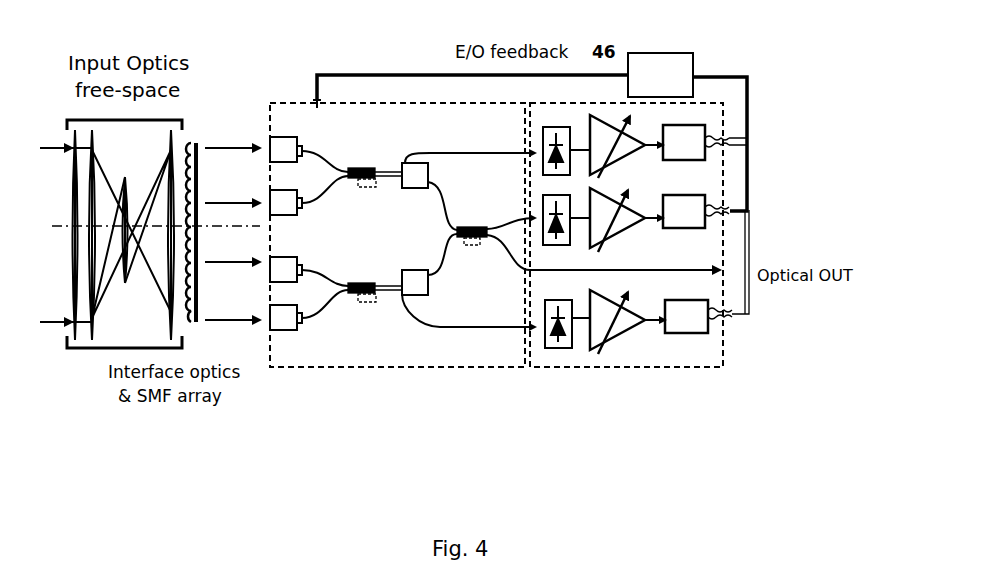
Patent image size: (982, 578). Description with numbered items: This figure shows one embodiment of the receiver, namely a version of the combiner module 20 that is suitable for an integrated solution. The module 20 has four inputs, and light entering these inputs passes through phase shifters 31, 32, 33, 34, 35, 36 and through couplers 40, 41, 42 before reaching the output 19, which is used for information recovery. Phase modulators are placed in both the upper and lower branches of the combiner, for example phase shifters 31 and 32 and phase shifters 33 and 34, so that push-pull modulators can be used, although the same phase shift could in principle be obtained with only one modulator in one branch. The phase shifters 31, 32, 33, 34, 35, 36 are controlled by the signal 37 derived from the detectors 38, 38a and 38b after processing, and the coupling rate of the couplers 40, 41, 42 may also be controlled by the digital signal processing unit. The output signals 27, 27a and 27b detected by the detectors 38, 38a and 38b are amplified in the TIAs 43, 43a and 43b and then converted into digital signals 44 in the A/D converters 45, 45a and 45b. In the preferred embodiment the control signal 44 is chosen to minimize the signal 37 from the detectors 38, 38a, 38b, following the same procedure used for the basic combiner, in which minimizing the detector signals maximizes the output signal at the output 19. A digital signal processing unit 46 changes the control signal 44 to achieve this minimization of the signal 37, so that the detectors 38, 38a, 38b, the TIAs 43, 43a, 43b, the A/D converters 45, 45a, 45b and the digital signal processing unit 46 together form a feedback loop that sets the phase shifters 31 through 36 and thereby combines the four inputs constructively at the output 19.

The output 19 is at (603, 256).
The combiner module 20 is at (397, 235).
The output signal 27 is at (511, 215).
The output signal 27a is at (470, 164).
The output signal 27b is at (468, 312).
The phase shifter 31 is at (309, 143).
The phase shifter 32 is at (309, 204).
The phase shifter 33 is at (309, 262).
The phase shifter 34 is at (309, 318).
The phase shifter 35 is at (429, 196).
The phase shifter 36 is at (429, 274).
The signal 37 is at (734, 144).
The detector 38 is at (566, 229).
The detector 38a is at (565, 140).
The detector 38b is at (567, 313).
The coupler 40 is at (370, 166).
The coupler 41 is at (374, 281).
The coupler 42 is at (474, 224).
The TIA 43 is at (626, 220).
The TIA 43a is at (626, 147).
The TIA 43b is at (627, 322).
The control signal 44 is at (470, 80).
The A/D converter 45 is at (696, 211).
The A/D converter 45a is at (705, 142).
The A/D converter 45b is at (698, 316).
The digital signal processing unit 46 is at (660, 75).